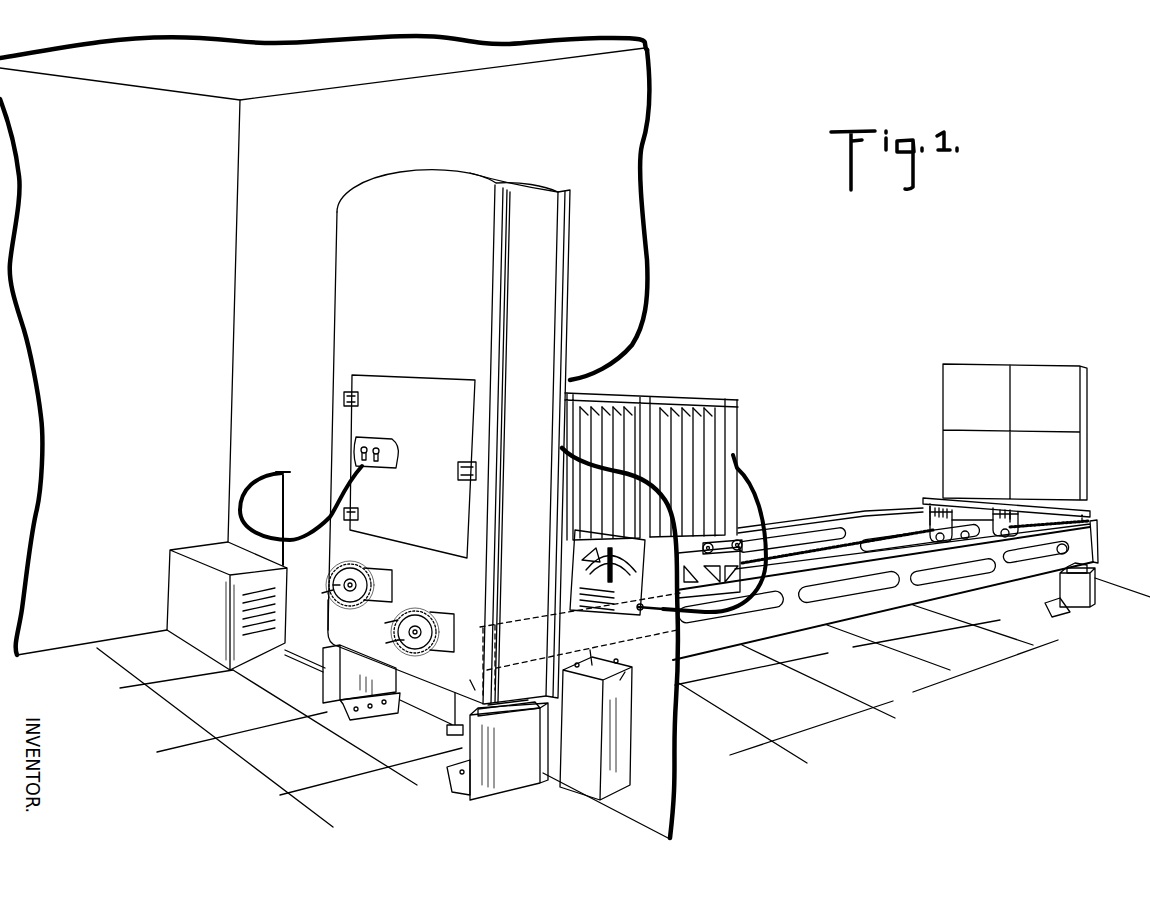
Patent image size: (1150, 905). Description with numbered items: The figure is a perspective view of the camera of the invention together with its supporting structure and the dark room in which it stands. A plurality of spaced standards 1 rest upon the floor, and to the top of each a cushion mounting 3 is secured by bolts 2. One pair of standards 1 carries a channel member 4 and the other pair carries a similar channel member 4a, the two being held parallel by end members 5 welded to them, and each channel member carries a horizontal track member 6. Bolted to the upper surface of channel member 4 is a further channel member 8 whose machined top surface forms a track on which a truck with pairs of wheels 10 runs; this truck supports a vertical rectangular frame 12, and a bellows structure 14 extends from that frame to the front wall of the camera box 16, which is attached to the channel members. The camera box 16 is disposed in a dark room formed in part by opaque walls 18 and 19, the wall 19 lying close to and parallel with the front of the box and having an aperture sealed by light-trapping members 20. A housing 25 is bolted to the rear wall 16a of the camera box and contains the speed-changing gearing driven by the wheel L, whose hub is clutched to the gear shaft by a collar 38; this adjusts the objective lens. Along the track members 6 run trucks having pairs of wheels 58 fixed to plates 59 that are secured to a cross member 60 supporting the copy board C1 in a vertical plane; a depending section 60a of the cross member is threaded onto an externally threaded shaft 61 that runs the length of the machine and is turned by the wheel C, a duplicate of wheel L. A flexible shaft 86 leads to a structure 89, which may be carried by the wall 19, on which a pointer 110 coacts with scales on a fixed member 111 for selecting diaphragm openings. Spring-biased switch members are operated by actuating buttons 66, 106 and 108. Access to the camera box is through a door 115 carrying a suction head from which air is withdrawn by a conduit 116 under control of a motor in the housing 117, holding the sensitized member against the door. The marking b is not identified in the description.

The standards 1 is at (330, 675).
The bolts 2 is at (465, 735).
The cushion mounting 3 is at (507, 713).
The channel member 4 is at (794, 576).
The channel member 4a is at (808, 520).
The end members 5 is at (1040, 527).
The track member 6 is at (945, 577).
The channel member 8 is at (745, 575).
The wheels 10 is at (745, 535).
The vertical rectangular frame 12 is at (740, 398).
The bellows structure 14 is at (690, 395).
The camera box 16 is at (337, 237).
The rear wall of the camera box 16a is at (338, 615).
The opaque wall 18 is at (458, 22).
The opaque wall 19 is at (631, 293).
The light-trapping members 20 is at (567, 268).
The housing 25 is at (397, 577).
The collar 38 is at (340, 575).
The wheels 58 is at (890, 535).
The plate 59 is at (925, 525).
The cross member 60 is at (935, 505).
The depending section 60a is at (1000, 515).
The externally threaded shaft 61 is at (915, 548).
The actuating button 66 is at (625, 672).
The flexible shaft 86 is at (742, 475).
The structure 89 is at (635, 638).
The actuating button 106 is at (590, 650).
The actuating button 108 is at (610, 710).
The pointer 110 is at (618, 550).
The member 111 is at (595, 545).
The door 115 is at (407, 385).
The conduit 116 is at (330, 525).
The housing 117 is at (182, 575).
The wheel L is at (338, 583).
The wheel C is at (416, 658).
The base corner b is at (470, 680).
The copy board C1 is at (1068, 413).